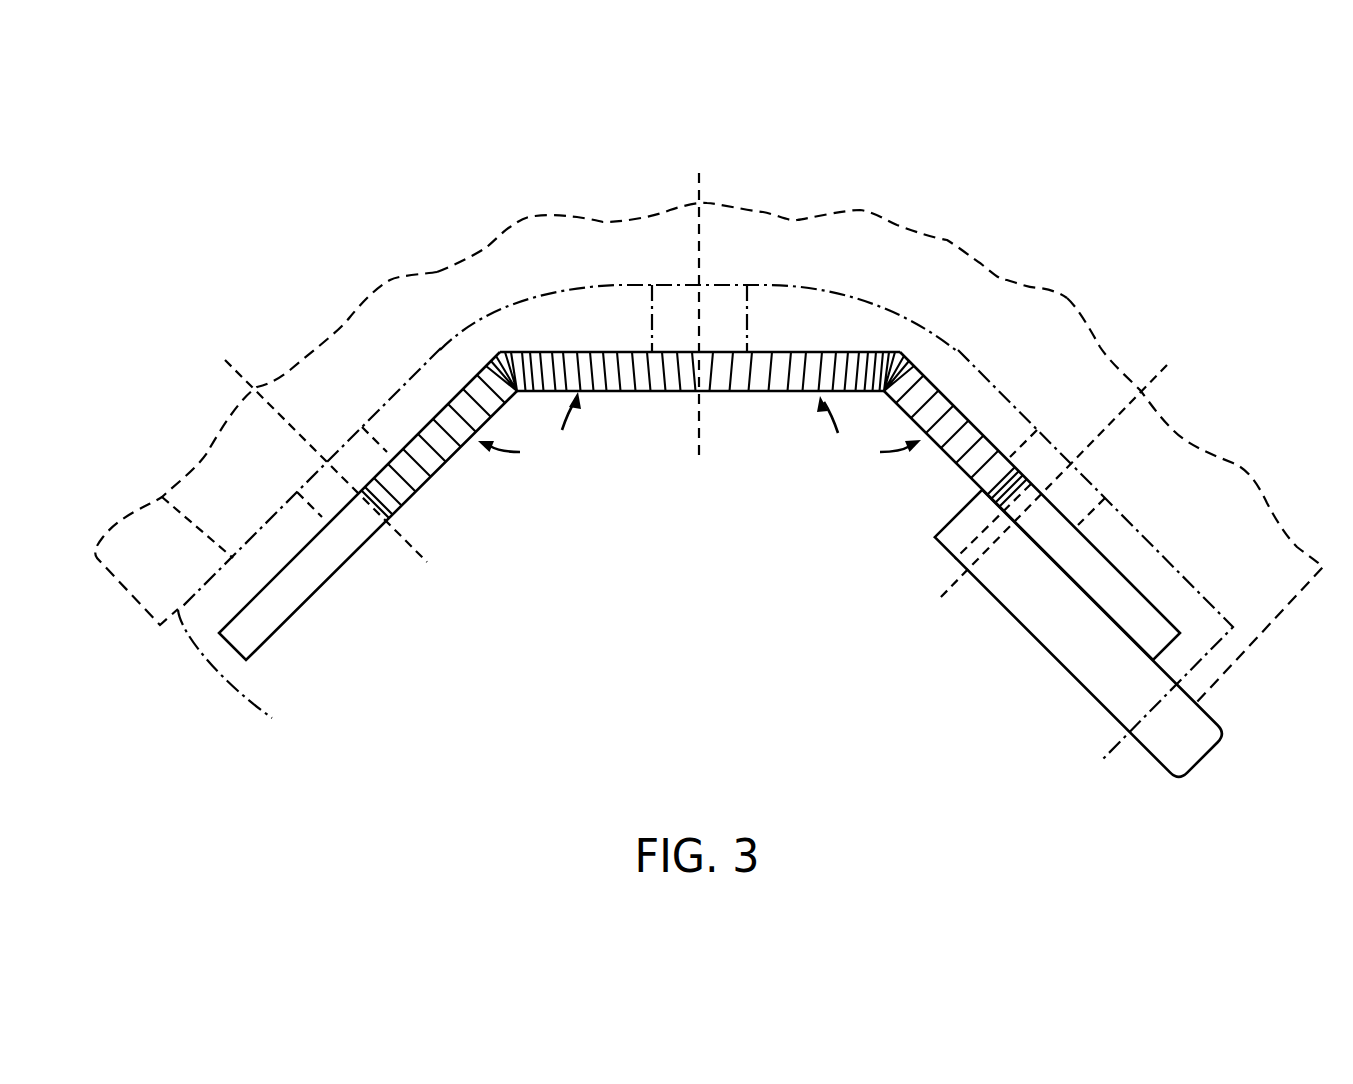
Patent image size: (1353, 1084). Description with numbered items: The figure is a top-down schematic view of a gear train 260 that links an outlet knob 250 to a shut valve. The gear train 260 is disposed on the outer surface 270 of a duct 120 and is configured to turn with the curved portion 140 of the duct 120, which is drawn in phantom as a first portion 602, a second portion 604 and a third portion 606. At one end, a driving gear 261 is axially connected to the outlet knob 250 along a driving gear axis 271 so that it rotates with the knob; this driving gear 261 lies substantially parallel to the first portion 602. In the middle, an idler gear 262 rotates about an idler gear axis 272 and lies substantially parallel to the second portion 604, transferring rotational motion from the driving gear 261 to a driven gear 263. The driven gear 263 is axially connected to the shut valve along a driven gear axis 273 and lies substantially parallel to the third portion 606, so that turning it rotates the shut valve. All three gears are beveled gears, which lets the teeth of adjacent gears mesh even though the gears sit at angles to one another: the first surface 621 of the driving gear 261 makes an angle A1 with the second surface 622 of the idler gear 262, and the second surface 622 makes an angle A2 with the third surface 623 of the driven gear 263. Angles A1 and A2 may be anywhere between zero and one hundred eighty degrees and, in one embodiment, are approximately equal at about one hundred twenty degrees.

The duct 120 is at (519, 203).
The curved portion 140 is at (778, 214).
The second portion 604 is at (618, 285).
The first portion 602 is at (1027, 410).
The idler gear axis 272 is at (702, 249).
The driven gear axis 273 is at (250, 388).
The driving gear axis 271 is at (1115, 420).
The third portion 606 is at (162, 497).
The outer surface 270 is at (241, 684).
The gear train 260 is at (495, 703).
The idler gear 262 is at (745, 380).
The second surface 622 is at (655, 392).
The driven gear 263 is at (289, 596).
The third surface 623 is at (367, 543).
The first surface 621 is at (962, 455).
The outlet knob 250 is at (1007, 615).
The driving gear 261 is at (1130, 612).
The angle A1 is at (869, 430).
The angle A2 is at (529, 428).